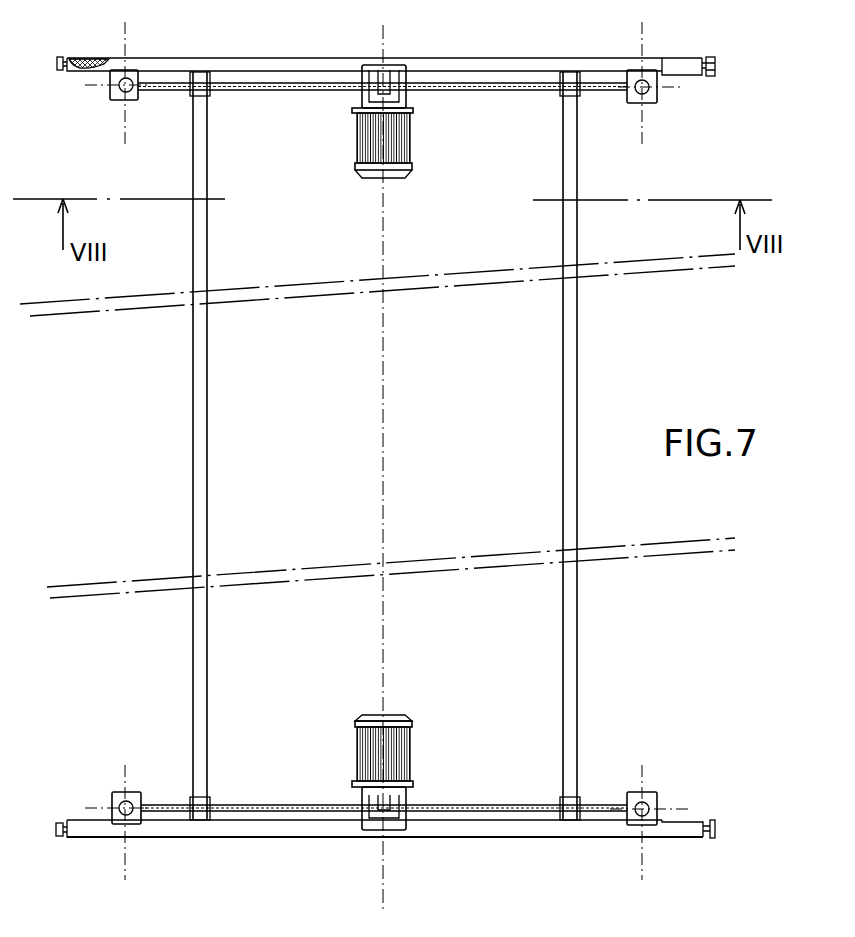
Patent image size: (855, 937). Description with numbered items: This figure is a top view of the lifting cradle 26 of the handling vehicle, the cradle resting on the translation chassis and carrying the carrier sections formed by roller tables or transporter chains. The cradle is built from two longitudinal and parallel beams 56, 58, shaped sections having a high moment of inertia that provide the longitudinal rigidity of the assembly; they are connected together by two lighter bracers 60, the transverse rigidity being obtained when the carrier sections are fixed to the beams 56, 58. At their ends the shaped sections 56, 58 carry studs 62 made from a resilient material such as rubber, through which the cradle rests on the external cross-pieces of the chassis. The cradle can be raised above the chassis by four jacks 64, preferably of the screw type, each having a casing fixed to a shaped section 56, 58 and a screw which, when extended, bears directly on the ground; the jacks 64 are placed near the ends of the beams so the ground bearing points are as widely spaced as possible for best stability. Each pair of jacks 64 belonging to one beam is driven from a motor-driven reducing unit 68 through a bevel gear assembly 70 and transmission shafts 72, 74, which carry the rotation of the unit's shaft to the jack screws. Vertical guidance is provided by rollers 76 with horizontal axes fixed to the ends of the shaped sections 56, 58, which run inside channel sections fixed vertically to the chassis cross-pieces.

The lifting cradle 26 is at (582, 429).
The longitudinal beam 56 is at (520, 66).
The longitudinal beam 58 is at (270, 838).
The bracer 60 is at (205, 341).
The stud 62 is at (88, 57).
The jack 64 is at (137, 100).
The motor-driven reducing unit 68 is at (405, 137).
The bevel gear assembly 70 is at (388, 72).
The transmission shaft 72 is at (270, 85).
The transmission shaft 74 is at (548, 86).
The roller 76 is at (58, 72).